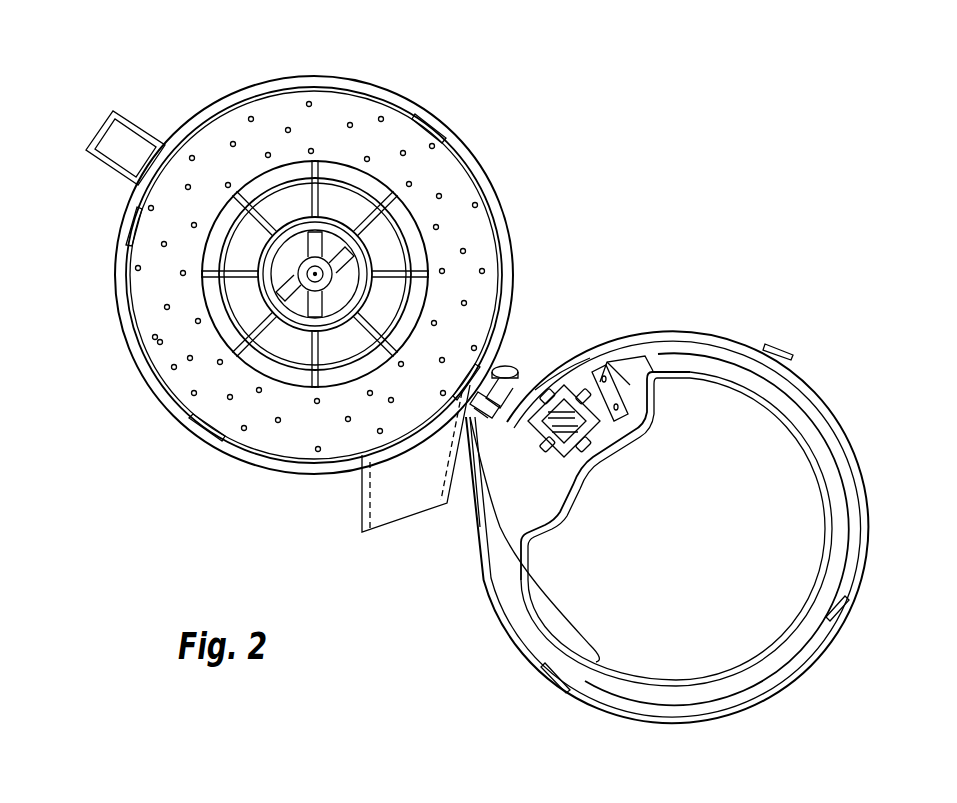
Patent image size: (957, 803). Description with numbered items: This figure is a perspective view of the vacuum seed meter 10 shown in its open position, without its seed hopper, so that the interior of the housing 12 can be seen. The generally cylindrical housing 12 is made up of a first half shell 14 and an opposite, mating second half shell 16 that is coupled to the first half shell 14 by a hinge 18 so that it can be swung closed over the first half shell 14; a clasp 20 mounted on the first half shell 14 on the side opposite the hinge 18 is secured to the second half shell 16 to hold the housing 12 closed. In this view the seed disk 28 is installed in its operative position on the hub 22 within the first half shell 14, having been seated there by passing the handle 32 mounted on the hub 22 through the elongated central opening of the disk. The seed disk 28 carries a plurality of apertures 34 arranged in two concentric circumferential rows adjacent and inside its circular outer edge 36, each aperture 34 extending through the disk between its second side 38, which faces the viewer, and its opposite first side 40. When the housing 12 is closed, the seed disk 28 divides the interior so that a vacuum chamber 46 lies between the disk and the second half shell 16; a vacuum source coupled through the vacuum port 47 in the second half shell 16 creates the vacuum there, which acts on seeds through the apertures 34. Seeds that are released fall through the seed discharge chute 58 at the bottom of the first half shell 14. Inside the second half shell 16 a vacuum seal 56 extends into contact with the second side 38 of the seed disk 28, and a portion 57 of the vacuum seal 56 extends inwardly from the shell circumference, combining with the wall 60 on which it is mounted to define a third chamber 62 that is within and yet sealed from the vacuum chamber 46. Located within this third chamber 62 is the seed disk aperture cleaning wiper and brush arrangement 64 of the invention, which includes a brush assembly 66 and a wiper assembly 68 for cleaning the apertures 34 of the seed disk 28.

The vacuum seed meter 10 is at (645, 238).
The housing 12 is at (617, 330).
The first half shell 14 is at (470, 156).
The second half shell 16 is at (745, 352).
The hinge 18 is at (512, 366).
The clasp 20 is at (128, 110).
The hub 22 is at (351, 269).
The seed disk 28 is at (240, 417).
The handle 32 is at (311, 239).
The apertures 34 is at (174, 369).
The circular outer edge 36 is at (170, 407).
The second side 38 is at (375, 110).
The first side 40 is at (303, 88).
The vacuum chamber 46 is at (764, 484).
The vacuum port 47 is at (517, 495).
The vacuum seal 56 is at (840, 566).
The portion of the vacuum seal 57 is at (566, 505).
The seed discharge chute 58 is at (385, 505).
The wall 60 is at (598, 467).
The third chamber 62 is at (630, 360).
The seed disk aperture cleaning wiper and brush arrangement 64 is at (546, 378).
The brush assembly 66 is at (548, 452).
The wiper assembly 68 is at (625, 398).